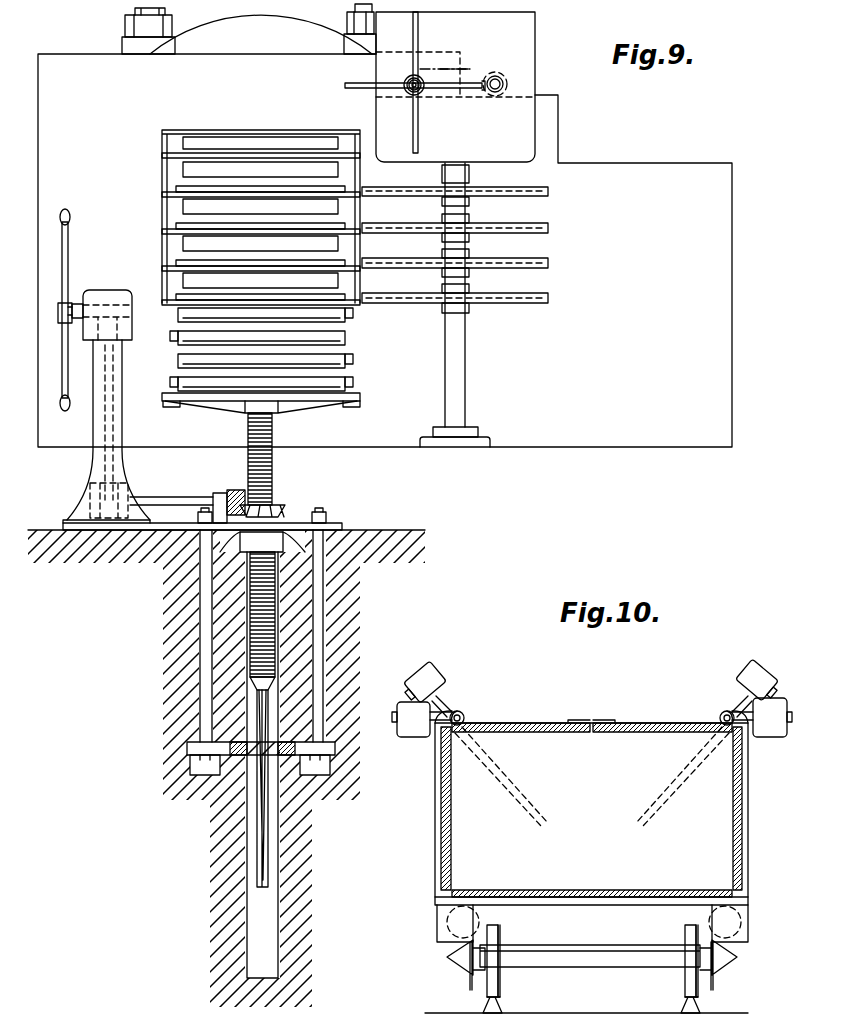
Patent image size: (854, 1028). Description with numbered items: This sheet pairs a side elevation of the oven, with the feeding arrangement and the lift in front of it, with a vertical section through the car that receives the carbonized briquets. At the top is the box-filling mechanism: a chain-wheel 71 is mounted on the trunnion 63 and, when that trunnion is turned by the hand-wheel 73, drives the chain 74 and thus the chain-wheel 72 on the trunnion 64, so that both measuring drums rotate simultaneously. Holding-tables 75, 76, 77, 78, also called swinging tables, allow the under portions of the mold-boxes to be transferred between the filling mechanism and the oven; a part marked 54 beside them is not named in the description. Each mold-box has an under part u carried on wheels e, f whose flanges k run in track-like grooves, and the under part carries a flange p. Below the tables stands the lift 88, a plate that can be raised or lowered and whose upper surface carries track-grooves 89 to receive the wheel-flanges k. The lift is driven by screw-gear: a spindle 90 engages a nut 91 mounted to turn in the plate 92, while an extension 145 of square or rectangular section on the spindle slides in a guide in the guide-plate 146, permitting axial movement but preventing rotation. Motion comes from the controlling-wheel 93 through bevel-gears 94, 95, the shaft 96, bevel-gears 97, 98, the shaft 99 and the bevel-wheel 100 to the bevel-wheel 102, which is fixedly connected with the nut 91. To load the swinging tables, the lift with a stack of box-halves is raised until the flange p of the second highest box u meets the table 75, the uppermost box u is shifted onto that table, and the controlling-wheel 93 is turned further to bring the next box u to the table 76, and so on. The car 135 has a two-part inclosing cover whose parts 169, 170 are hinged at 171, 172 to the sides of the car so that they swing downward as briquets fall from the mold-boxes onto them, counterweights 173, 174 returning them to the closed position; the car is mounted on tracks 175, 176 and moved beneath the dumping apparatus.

In FIG. 9, the standard or column 54 is at (458, 369).
In FIG. 9, the trunnion 63 is at (410, 90).
In FIG. 9, the trunnion 64 is at (497, 96).
In FIG. 9, the chain-wheel 71 is at (408, 79).
In FIG. 9, the chain-wheel 72 is at (500, 76).
In FIG. 9, the hand-wheel 73 is at (376, 84).
In FIG. 9, the chain 74 is at (470, 69).
In FIG. 9, the holding-table 75 is at (548, 299).
In FIG. 9, the holding-table 76 is at (548, 264).
In FIG. 9, the holding-table 77 is at (548, 229).
In FIG. 9, the holding-table 78 is at (407, 194).
In FIG. 9, the lift 88 is at (300, 401).
In FIG. 9, the track-grooves 89 is at (184, 407).
In FIG. 9, the screw-spindle 90 is at (273, 440).
In FIG. 9, the nut 91 is at (281, 520).
In FIG. 9, the plate 92 is at (270, 548).
In FIG. 9, the controlling-wheel 93 is at (73, 258).
In FIG. 9, the bevel-gear 94 is at (115, 292).
In FIG. 9, the bevel-gear 95 is at (100, 338).
In FIG. 9, the shaft 96 is at (105, 418).
In FIG. 9, the bevel-gear 97 is at (93, 487).
In FIG. 9, the bevel-gear 98 is at (120, 506).
In FIG. 9, the shaft 99 is at (170, 497).
In FIG. 9, the bevel-wheel 100 is at (236, 490).
In FIG. 9, the bevel-wheel 102 is at (280, 506).
In FIG. 10, the car 135 is at (445, 853).
In FIG. 9, the extension 145 is at (258, 850).
In FIG. 9, the guide-plate 146 is at (190, 749).
In FIG. 10, the cover part 169 is at (575, 733).
In FIG. 10, the cover part 170 is at (627, 733).
In FIG. 10, the hinge 171 is at (470, 709).
In FIG. 10, the hinge 172 is at (720, 715).
In FIG. 10, the counterweight 173 is at (432, 670).
In FIG. 10, the counterweight 174 is at (750, 671).
In FIG. 10, the track 175 is at (500, 999).
In FIG. 10, the track 176 is at (685, 1001).
In FIG. 9, the under part u is at (261, 345).
In FIG. 9, the wheel f is at (170, 337).
In FIG. 9, the wheel-flange k is at (170, 382).
In FIG. 9, the flange p is at (353, 315).
In FIG. 9, the wheel e is at (353, 360).